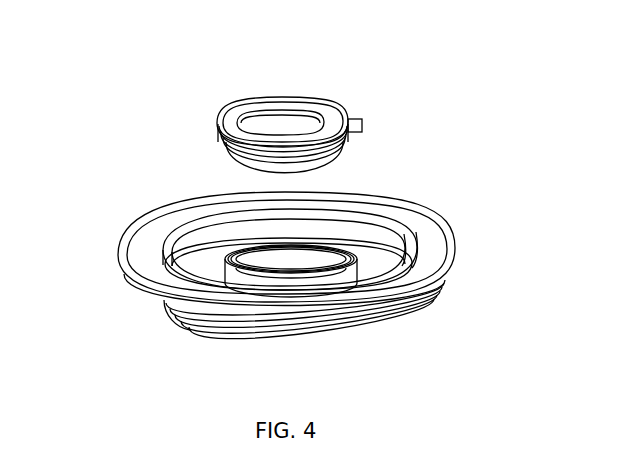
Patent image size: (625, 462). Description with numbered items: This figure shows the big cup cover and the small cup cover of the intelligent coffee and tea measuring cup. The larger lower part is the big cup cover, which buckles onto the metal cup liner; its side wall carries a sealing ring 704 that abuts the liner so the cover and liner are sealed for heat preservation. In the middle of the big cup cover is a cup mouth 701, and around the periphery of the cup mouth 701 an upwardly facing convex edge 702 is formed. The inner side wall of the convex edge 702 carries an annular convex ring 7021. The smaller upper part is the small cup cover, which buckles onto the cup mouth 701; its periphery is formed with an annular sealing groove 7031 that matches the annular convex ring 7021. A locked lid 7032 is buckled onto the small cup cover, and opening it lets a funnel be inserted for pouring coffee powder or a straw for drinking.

The locked lid 7032 is at (270, 98).
The annular sealing groove 7031 is at (221, 148).
The cup mouth 701 is at (273, 279).
The annular convex ring 7021 is at (342, 260).
The convex edge 702 is at (358, 286).
The sealing ring 704 is at (204, 321).